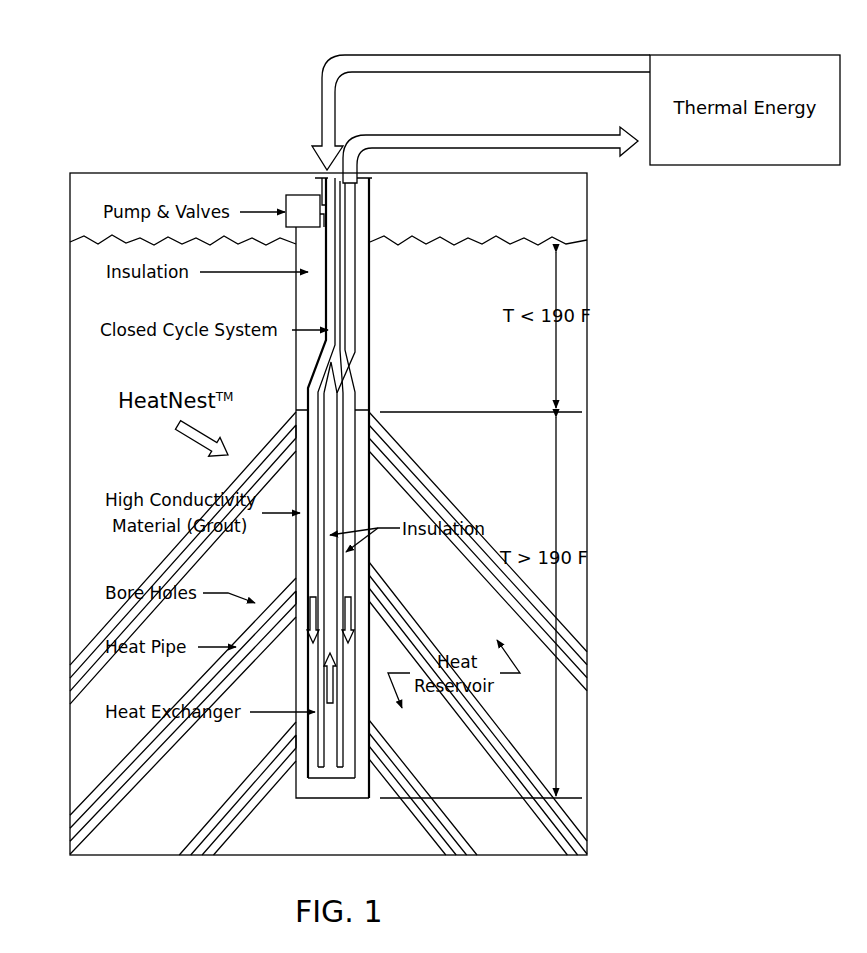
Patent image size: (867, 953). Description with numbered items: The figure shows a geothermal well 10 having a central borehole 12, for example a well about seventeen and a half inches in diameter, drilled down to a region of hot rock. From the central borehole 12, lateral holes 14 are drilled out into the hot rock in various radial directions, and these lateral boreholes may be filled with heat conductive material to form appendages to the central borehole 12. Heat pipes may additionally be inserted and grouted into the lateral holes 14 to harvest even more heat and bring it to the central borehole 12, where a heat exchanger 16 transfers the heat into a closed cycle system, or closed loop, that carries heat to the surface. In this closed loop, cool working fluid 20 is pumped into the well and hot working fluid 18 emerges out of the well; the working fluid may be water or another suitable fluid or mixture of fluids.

The geothermal well 10 is at (163, 128).
The central borehole 12 is at (372, 357).
The lateral holes 14 is at (236, 483).
The heat exchanger 16 is at (104, 713).
The hot working fluid 18 is at (476, 136).
The cool working fluid 20 is at (503, 57).